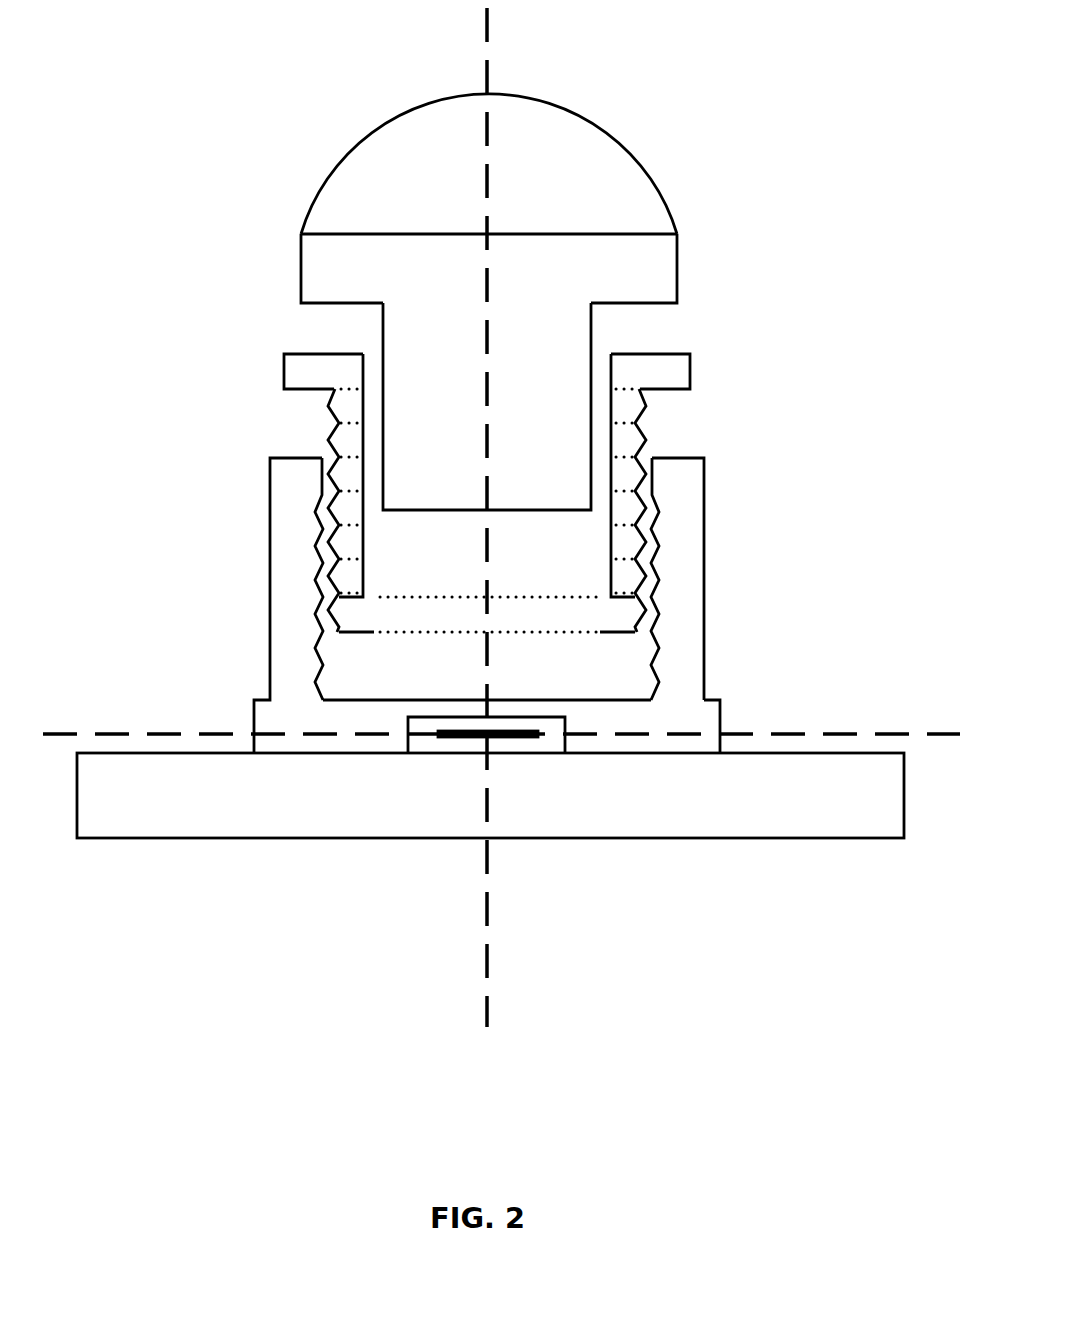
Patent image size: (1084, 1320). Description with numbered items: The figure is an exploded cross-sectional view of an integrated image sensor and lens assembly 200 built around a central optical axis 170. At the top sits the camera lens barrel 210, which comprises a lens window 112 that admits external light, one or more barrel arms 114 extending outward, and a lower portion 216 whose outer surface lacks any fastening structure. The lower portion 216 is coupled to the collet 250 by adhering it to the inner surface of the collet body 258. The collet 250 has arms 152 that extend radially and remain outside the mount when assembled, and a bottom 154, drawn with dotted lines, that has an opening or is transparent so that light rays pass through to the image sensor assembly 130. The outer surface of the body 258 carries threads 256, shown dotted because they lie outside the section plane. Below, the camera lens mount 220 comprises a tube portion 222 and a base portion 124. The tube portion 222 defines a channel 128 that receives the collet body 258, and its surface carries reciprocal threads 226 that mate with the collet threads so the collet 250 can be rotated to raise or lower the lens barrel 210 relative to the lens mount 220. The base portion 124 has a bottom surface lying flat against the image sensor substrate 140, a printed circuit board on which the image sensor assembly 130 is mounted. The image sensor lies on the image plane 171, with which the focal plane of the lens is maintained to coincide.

The integrated image sensor and lens assembly 200 is at (119, 37).
The lens window 112 is at (453, 283).
The camera lens barrel 210 is at (375, 155).
The barrel arms 114 is at (313, 265).
The lower portion 216 is at (407, 338).
The arms of the collet 152 is at (320, 360).
The collet 250 is at (469, 469).
The threads 256 is at (645, 437).
The body of the collet 258 is at (350, 543).
The tube portion 222 is at (270, 492).
The camera lens mount 220 is at (483, 594).
The threads 226 is at (654, 567).
The channel of the tube portion 128 is at (338, 674).
The bottom of the collet 154 is at (582, 614).
The base portion 124 is at (723, 693).
The image sensor assembly 130 is at (565, 737).
The image sensor substrate 140 is at (300, 842).
The optical axis 170 is at (579, 1057).
The image plane 171 is at (787, 737).